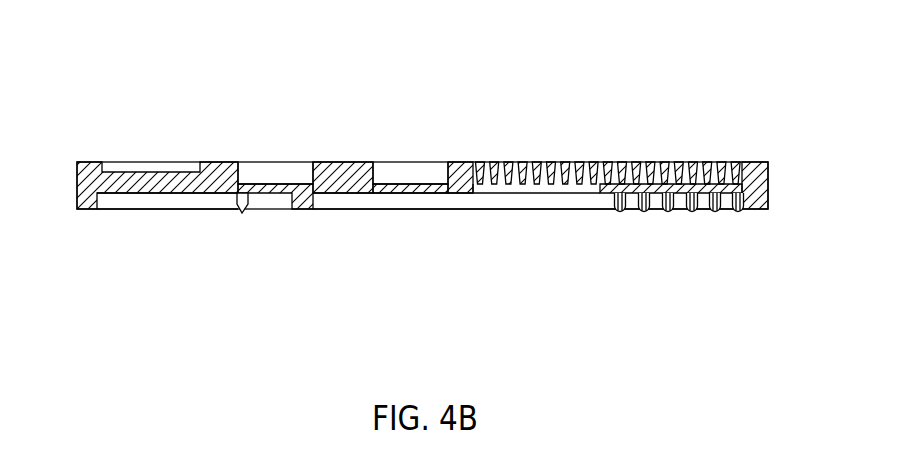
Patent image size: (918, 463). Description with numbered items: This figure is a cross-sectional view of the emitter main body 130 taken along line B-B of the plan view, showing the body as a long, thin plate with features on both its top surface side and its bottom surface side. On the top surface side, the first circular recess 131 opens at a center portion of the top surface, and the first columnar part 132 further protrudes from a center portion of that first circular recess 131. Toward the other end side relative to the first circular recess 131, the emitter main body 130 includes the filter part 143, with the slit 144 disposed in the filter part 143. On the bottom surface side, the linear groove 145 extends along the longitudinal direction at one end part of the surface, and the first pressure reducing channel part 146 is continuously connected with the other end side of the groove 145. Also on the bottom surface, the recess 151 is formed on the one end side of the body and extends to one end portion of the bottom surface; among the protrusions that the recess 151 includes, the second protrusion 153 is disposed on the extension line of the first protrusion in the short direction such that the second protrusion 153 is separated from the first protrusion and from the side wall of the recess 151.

The emitter main body 130 is at (747, 99).
The first circular recess 131 is at (430, 184).
The first columnar part 132 is at (274, 184).
The filter part 143 is at (642, 163).
The slit 144 is at (578, 193).
The groove 145 is at (420, 209).
The first pressure reducing channel part 146 is at (726, 210).
The recess 151 is at (170, 209).
The second protrusion 153 is at (245, 213).